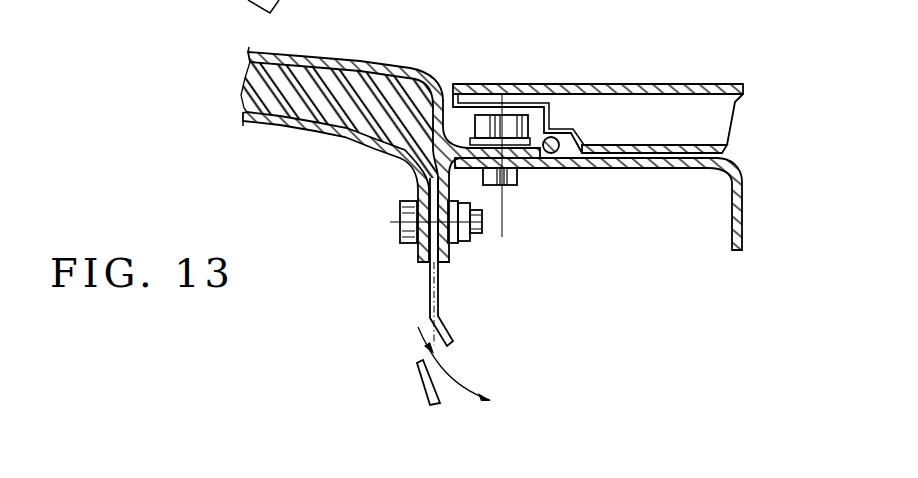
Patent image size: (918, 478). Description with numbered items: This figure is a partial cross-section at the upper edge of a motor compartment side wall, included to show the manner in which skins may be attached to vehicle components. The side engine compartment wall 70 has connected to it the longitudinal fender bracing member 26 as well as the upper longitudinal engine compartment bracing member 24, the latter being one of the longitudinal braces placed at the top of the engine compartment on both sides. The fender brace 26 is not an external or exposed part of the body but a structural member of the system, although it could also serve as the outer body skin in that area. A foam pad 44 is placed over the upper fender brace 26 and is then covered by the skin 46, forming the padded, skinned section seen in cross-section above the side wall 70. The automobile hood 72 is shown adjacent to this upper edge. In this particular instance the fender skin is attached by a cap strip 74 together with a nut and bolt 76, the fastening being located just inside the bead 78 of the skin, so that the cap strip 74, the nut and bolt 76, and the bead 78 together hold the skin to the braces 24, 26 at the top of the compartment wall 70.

The longitudinal bracing member 24 is at (598, 168).
The longitudinal fender bracing member 26 is at (322, 131).
The foam pad 44 is at (394, 100).
The skin 46 is at (352, 58).
The side engine compartment wall 70 is at (440, 292).
The automobile hood 72 is at (566, 84).
The cap strip 74 is at (538, 169).
The nut and bolt 76 is at (530, 115).
The bead 78 is at (577, 160).